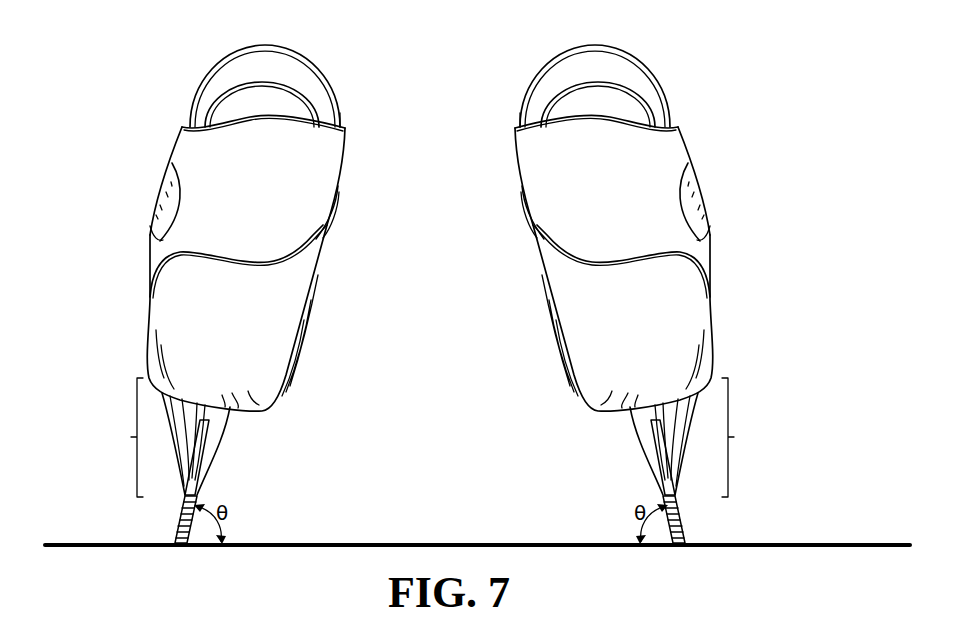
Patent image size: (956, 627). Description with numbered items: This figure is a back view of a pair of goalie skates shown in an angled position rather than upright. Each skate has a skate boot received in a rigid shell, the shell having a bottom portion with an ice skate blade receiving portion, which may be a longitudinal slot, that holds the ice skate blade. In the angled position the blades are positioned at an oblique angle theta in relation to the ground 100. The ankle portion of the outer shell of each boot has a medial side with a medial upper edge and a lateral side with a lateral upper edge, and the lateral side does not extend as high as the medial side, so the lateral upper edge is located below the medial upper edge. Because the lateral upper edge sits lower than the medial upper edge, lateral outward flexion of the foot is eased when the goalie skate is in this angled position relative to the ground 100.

The ground 100 is at (100, 543).